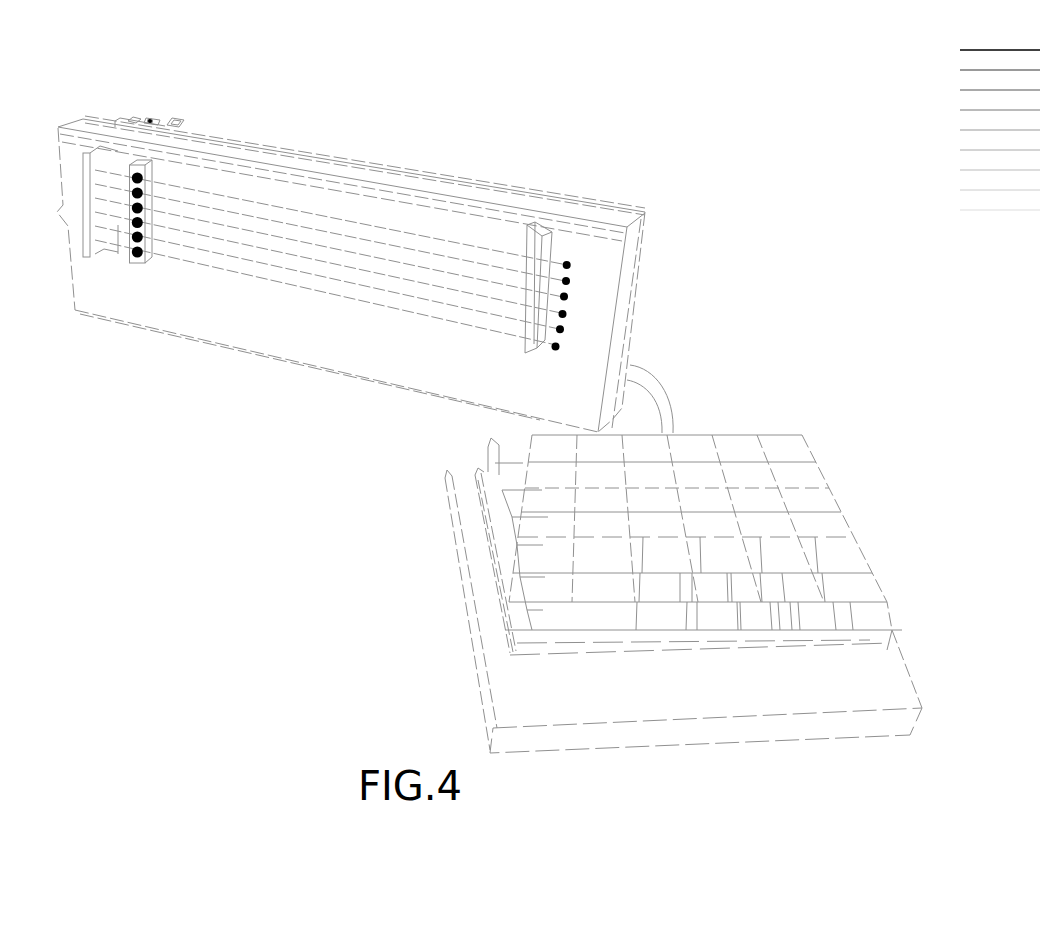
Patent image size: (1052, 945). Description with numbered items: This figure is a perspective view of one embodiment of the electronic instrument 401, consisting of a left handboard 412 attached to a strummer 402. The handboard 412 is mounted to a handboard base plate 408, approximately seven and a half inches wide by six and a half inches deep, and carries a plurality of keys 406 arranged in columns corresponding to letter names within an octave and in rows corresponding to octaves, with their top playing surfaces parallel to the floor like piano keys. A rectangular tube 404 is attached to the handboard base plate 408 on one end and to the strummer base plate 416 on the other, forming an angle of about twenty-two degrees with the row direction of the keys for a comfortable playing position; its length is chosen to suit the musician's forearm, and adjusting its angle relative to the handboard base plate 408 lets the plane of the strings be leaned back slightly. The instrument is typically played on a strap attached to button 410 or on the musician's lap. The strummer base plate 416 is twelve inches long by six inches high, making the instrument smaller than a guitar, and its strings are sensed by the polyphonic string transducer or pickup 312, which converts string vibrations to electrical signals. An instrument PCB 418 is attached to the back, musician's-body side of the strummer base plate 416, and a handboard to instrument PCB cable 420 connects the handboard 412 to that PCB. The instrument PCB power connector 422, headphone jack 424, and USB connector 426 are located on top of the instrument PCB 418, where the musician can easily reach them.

The computing device 401 is at (255, 60).
The strummer 402 is at (617, 267).
The polyphonic string transducer or pickup 312 is at (150, 163).
The strummer base plate 416 is at (300, 163).
The instrument PCB 418 is at (440, 177).
The handboard to instrument PCB cable 420 is at (662, 393).
The rectangular tube 404 is at (550, 430).
The keys 406 is at (487, 450).
The handboard base plate 408 is at (453, 562).
The button 410 is at (60, 222).
The handboard 412 is at (500, 610).
The instrument PCB power connector 422 is at (135, 118).
The headphone jack 424 is at (152, 118).
The USB connector 426 is at (177, 116).